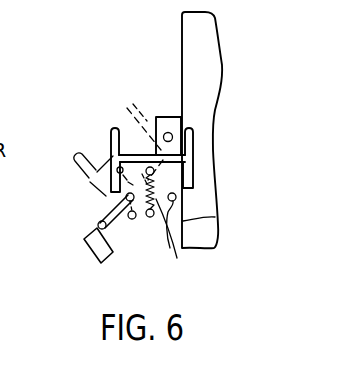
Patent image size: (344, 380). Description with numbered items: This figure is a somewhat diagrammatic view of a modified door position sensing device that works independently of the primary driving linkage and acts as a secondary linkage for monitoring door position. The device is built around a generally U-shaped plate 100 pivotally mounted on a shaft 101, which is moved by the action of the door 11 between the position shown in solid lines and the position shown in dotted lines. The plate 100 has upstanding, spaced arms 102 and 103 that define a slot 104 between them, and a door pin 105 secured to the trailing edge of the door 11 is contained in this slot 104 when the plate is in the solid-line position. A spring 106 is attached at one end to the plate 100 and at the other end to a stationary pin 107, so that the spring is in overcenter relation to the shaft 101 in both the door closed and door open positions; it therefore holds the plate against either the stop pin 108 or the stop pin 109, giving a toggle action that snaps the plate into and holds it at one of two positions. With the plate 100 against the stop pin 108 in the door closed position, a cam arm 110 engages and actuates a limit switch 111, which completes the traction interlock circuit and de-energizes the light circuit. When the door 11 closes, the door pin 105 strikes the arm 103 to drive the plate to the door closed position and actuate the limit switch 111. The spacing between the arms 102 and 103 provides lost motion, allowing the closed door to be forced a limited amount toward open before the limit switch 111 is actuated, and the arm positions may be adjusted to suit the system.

The door 11 is at (205, 203).
The U-shaped plate 100 is at (194, 166).
The shaft 101 is at (125, 196).
The arm 102 is at (111, 140).
The arm 103 is at (189, 133).
The slot 104 is at (139, 147).
The door pin 105 is at (166, 133).
The spring 106 is at (170, 248).
The stationary pin 107 is at (152, 201).
The stop pin 108 is at (215, 217).
The stop pin 109 is at (131, 220).
The cam arm 110 is at (98, 223).
The limit switch 111 is at (89, 251).